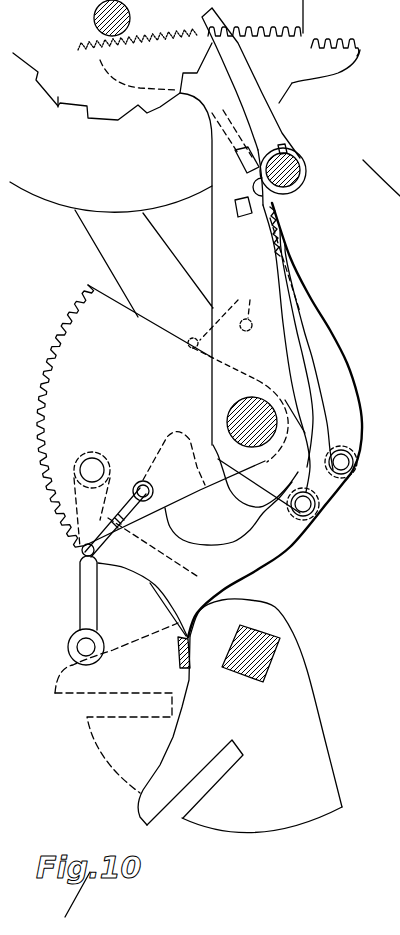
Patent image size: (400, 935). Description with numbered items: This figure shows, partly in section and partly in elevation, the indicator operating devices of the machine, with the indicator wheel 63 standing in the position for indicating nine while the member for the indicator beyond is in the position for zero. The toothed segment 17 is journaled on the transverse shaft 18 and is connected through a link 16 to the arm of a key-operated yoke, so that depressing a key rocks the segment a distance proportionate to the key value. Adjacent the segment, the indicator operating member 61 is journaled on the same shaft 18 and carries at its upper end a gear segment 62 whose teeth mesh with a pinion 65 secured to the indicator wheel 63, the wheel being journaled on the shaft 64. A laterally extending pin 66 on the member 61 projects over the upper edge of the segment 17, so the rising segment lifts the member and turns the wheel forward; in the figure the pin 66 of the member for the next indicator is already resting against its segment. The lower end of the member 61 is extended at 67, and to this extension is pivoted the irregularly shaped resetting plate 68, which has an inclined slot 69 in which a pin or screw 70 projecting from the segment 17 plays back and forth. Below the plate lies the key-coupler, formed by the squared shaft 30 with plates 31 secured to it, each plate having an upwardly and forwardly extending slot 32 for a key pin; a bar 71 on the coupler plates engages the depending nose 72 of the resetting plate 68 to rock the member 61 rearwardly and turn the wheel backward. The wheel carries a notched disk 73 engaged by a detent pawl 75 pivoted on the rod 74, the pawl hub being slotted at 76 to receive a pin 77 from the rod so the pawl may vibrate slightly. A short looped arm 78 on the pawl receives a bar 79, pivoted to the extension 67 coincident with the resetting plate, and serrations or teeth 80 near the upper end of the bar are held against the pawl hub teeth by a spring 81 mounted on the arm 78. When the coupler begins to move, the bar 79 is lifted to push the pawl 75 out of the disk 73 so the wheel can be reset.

The link 16 is at (90, 605).
The toothed segment 17 is at (151, 416).
The transverse shaft 18 is at (248, 405).
The squared shaft 30 is at (265, 640).
The plate 31 is at (294, 702).
The slot 32 is at (220, 768).
The indicator operating member 61 is at (212, 229).
The gear segment 62 is at (310, 47).
The indicator wheel 63 is at (111, 193).
The shaft 64 is at (100, 23).
The pinion 65 is at (143, 24).
The laterally extending pin 66 is at (222, 332).
The extension 67 is at (232, 502).
The resetting plate 68 is at (137, 545).
The inclined slot 69 is at (117, 536).
The pin or screw 70 is at (140, 483).
The bar 71 is at (178, 657).
The depending nose 72 is at (188, 620).
The notched disk 73 is at (58, 108).
The rod 74 is at (306, 175).
The detent pawl 75 is at (262, 115).
The slot 76 is at (278, 148).
The pin 77 is at (290, 147).
The short arm 78 is at (276, 203).
The bar 79 is at (310, 353).
The serrations or teeth 80 is at (284, 227).
The spring 81 is at (232, 170).